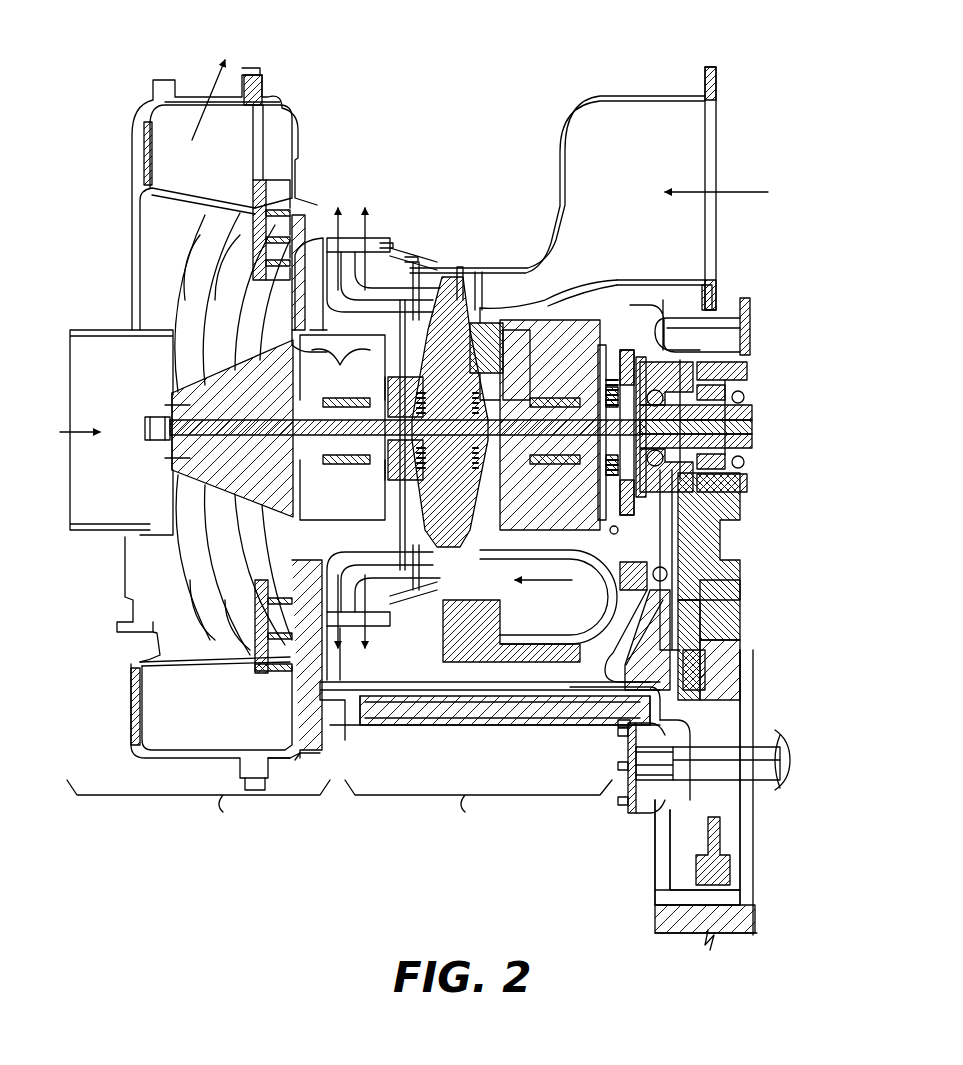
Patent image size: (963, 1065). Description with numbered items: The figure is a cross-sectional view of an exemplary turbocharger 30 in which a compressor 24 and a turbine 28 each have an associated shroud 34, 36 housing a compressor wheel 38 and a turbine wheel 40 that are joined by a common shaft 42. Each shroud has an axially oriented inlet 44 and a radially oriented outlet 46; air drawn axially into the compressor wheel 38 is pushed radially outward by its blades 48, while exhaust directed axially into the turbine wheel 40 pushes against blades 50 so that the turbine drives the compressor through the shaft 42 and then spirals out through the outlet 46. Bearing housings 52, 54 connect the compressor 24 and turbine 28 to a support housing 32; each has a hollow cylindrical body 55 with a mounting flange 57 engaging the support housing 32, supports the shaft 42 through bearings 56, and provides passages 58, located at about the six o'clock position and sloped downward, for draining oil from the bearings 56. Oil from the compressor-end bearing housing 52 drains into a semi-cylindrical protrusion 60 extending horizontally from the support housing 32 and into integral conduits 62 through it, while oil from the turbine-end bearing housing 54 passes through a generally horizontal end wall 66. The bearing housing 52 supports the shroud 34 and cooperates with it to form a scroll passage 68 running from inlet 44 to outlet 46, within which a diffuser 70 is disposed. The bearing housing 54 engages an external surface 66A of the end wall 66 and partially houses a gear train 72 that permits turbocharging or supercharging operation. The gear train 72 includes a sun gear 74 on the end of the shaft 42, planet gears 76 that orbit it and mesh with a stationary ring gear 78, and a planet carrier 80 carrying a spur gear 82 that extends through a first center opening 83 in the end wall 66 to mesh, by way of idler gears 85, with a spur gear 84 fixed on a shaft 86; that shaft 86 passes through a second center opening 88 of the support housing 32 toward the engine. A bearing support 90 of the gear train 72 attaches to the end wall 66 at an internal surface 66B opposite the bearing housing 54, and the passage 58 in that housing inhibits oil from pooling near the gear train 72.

The compressor 24 is at (198, 810).
The turbine 28 is at (478, 810).
The turbocharger 30 is at (752, 55).
The support housing 32 is at (590, 725).
The shroud 34 is at (133, 150).
The shroud 36 is at (508, 268).
The compressor wheel 38 is at (266, 471).
The turbine wheel 40 is at (465, 463).
The shaft 42 is at (355, 436).
The inlet 44 is at (405, 384).
The outlet 46 is at (279, 353).
The blades 48 is at (190, 360).
The blades 50 is at (455, 275).
The bearing housing 52 is at (313, 760).
The bearing housing 54 is at (548, 280).
The cylindrical body 55 is at (320, 643).
The bearings 56 is at (338, 395).
The mounting flange 57 is at (338, 728).
The passages 58 is at (360, 470).
The semi-cylindrical protrusion 60 is at (500, 698).
The integral conduits 62 is at (394, 720).
The end wall 66 is at (655, 880).
The external surface 66A is at (628, 350).
The internal surface 66B is at (725, 600).
The scroll passage 68 is at (285, 205).
The diffuser 70 is at (312, 215).
The gear train 72 is at (770, 390).
The sun gear 74 is at (660, 410).
The planet gears 76 is at (628, 360).
The ring gear 78 is at (600, 345).
The planet carrier 80 is at (700, 345).
The spur gear 82 is at (715, 400).
The first center opening 83 is at (715, 370).
The spur gear 84 is at (735, 660).
The idler gears 85 is at (740, 620).
The shaft 86 is at (796, 760).
The second center opening 88 is at (628, 810).
The bearing support 90 is at (706, 675).